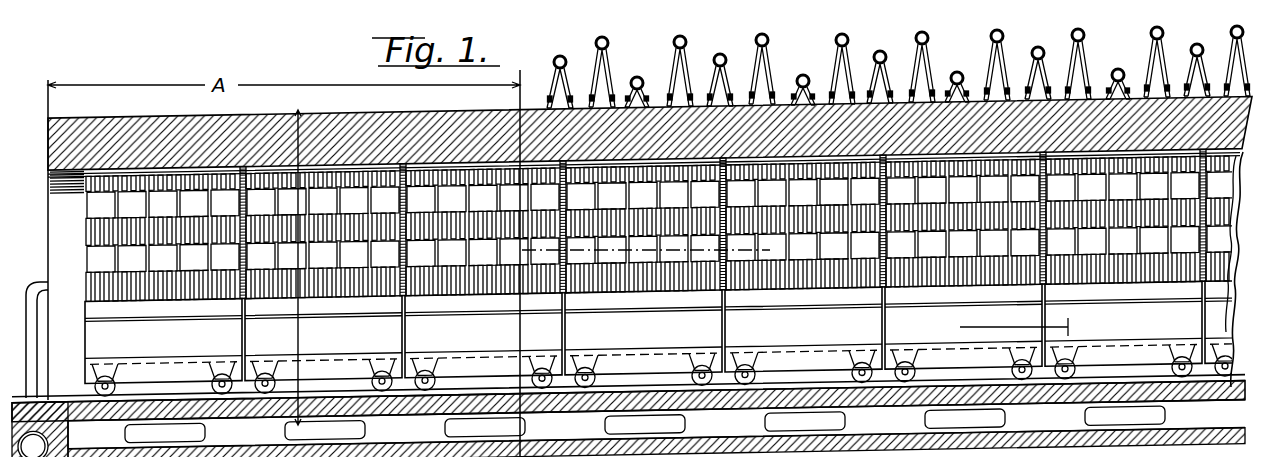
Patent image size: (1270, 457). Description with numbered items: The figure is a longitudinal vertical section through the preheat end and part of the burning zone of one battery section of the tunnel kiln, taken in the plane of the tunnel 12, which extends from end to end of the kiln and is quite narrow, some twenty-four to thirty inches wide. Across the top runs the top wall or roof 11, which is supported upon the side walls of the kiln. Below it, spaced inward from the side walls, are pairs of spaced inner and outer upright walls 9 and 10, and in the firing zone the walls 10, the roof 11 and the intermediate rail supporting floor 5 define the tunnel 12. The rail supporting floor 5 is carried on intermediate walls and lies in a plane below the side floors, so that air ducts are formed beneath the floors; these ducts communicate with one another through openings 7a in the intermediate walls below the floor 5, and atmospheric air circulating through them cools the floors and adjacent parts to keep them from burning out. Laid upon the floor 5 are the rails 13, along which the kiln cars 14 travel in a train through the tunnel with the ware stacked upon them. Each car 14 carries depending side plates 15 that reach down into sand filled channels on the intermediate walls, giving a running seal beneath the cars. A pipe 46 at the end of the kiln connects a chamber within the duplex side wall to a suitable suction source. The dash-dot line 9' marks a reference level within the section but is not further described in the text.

The intermediate rail supporting floor 5 is at (722, 456).
The openings 7a is at (1138, 421).
The inner upright walls 9 is at (1020, 327).
The ware level line 9' is at (636, 255).
The outer upright walls 10 is at (773, 266).
The top wall or roof 11 is at (153, 118).
The tunnel 12 is at (1241, 269).
The rails 13 is at (73, 388).
The kiln cars 14 is at (86, 336).
The side plates 15 is at (88, 367).
The pipe 46 is at (36, 280).